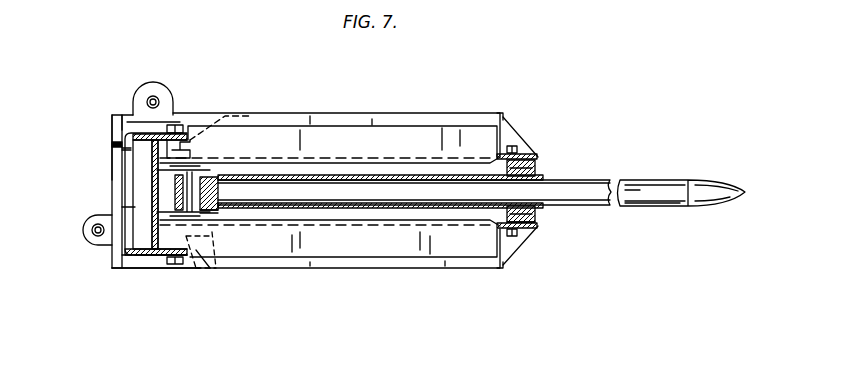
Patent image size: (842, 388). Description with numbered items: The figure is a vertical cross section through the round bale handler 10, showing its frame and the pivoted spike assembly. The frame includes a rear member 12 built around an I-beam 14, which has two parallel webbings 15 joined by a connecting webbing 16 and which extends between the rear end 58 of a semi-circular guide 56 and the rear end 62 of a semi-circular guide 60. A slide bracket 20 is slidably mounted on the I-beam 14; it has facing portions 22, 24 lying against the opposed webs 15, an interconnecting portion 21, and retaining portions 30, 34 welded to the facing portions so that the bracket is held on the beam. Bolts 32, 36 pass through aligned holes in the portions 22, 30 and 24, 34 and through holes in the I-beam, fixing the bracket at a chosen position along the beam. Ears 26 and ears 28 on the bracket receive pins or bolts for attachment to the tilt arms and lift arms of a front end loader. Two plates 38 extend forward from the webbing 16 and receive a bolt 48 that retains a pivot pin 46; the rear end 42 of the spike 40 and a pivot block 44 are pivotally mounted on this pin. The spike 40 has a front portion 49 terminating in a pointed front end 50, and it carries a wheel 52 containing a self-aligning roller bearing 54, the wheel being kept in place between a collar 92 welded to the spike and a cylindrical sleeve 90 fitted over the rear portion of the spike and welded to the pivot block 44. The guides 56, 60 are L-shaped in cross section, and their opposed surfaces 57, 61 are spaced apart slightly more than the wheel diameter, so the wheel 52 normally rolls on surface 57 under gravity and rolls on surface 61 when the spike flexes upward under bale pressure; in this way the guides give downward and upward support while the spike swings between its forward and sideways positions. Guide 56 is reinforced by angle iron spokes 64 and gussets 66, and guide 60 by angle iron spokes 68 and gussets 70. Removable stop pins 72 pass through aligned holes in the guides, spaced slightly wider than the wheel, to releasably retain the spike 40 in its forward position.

The handler 10 is at (368, 96).
The rear member 12 is at (106, 128).
The I-beam 14 is at (150, 194).
The parallel webbings 15 is at (130, 150).
The webbing 16 is at (150, 183).
The slide bracket 20 is at (118, 142).
The interconnecting portion 21 is at (122, 207).
The facing portion 22 is at (150, 262).
The facing portion 24 is at (170, 128).
The ears 26 is at (90, 236).
The ears 28 is at (151, 86).
The retaining portion 30 is at (198, 272).
The bolt 32 is at (178, 265).
The retaining portion 34 is at (228, 112).
The bolt 36 is at (185, 130).
The plates 38 is at (192, 178).
The spike 40 is at (682, 189).
The rear end 42 is at (222, 186).
The pivot block 44 is at (205, 178).
The pivot pin 46 is at (220, 214).
The bolt 48 is at (206, 272).
The front portion 49 is at (628, 208).
The pointed front end 50 is at (698, 185).
The wheel 52 is at (540, 170).
The self-aligning roller bearing 54 is at (538, 218).
The semi-circular guide 56 is at (519, 246).
The opposed surface 57 is at (532, 228).
The rear end 58 is at (118, 265).
The semi-circular guide 60 is at (515, 124).
The opposed surface 61 is at (538, 157).
The rear end 62 is at (121, 118).
The angle iron spokes 64 is at (414, 250).
The gussets 66 is at (510, 262).
The angle iron spokes 68 is at (418, 135).
The gussets 70 is at (512, 118).
The removable stop pins 72 is at (520, 148).
The cylindrical sleeve 90 is at (378, 174).
The collar 92 is at (540, 206).